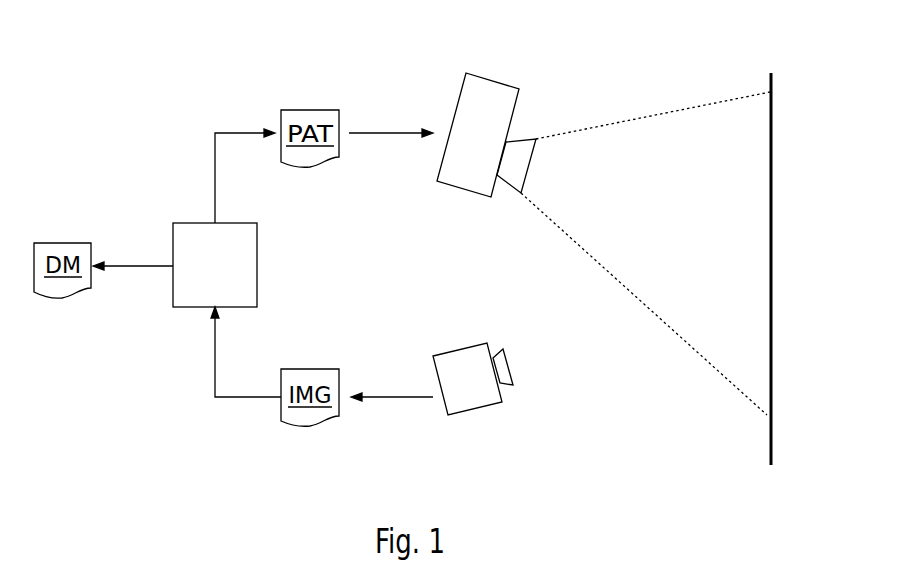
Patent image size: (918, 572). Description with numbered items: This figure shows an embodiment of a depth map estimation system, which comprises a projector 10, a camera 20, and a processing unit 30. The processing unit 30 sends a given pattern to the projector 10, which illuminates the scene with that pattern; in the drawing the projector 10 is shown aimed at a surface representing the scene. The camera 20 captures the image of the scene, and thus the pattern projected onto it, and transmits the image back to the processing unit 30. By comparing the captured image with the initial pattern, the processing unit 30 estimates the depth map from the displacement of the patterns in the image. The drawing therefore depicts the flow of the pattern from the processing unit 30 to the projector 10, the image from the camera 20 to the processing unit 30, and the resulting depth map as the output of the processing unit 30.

The projector 10 is at (466, 72).
The camera 20 is at (448, 428).
The processing unit 30 is at (202, 277).